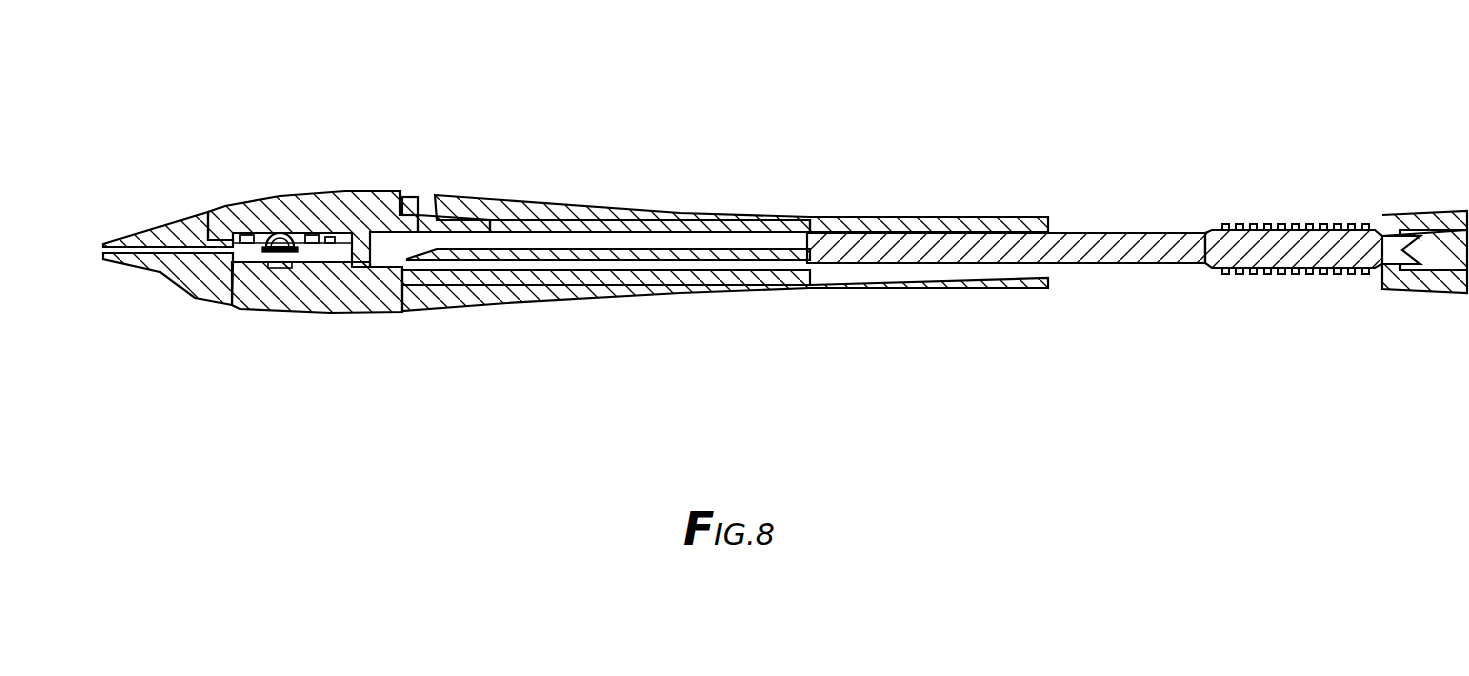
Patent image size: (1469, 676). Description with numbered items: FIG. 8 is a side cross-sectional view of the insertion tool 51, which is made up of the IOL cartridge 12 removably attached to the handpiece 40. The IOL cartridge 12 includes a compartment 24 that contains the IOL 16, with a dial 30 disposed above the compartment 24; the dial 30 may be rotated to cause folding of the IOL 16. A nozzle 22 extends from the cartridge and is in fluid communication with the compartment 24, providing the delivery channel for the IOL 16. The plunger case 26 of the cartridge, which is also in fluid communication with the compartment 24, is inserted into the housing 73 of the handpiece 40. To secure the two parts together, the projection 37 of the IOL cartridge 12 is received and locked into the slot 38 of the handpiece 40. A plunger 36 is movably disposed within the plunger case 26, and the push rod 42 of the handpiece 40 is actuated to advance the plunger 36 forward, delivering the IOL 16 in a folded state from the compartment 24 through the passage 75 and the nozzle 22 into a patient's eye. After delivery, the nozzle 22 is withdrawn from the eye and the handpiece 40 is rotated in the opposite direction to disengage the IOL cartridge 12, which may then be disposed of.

The IOL cartridge 12 is at (287, 340).
The IOL 16 is at (265, 265).
The nozzle 22 is at (150, 226).
The compartment 24 is at (312, 260).
The plunger case 26 is at (550, 222).
The dial 30 is at (258, 160).
The plunger 36 is at (672, 255).
The projection 37 is at (412, 200).
The slot 38 is at (424, 190).
The handpiece 40 is at (512, 316).
The push rod 42 is at (860, 250).
The insertion tool 51 is at (619, 153).
The housing 73 is at (750, 216).
The passage 75 is at (231, 258).